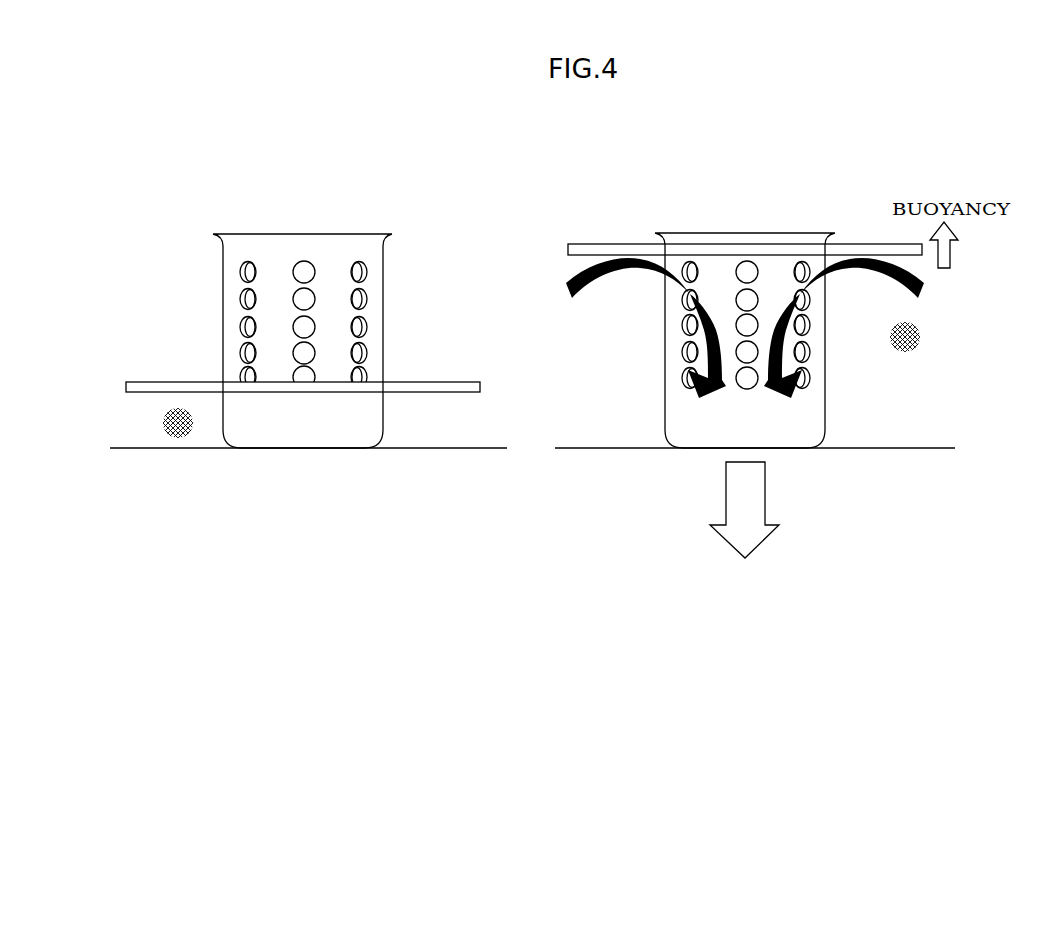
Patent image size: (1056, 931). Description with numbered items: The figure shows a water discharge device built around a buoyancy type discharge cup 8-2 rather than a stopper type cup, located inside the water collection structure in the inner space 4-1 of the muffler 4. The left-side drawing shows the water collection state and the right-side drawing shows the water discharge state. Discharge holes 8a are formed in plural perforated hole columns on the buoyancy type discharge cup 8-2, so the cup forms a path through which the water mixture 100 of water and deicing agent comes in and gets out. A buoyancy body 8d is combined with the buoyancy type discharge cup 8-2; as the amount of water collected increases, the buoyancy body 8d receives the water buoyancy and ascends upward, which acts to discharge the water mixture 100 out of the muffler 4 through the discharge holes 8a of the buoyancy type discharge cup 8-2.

The inner space 4-1 is at (318, 170).
The buoyancy type discharge cup 8-2 is at (292, 432).
The discharge holes 8a is at (358, 299).
The buoyancy body 8d is at (170, 380).
The muffler 4 is at (445, 450).
The water mixture 100 is at (172, 438).